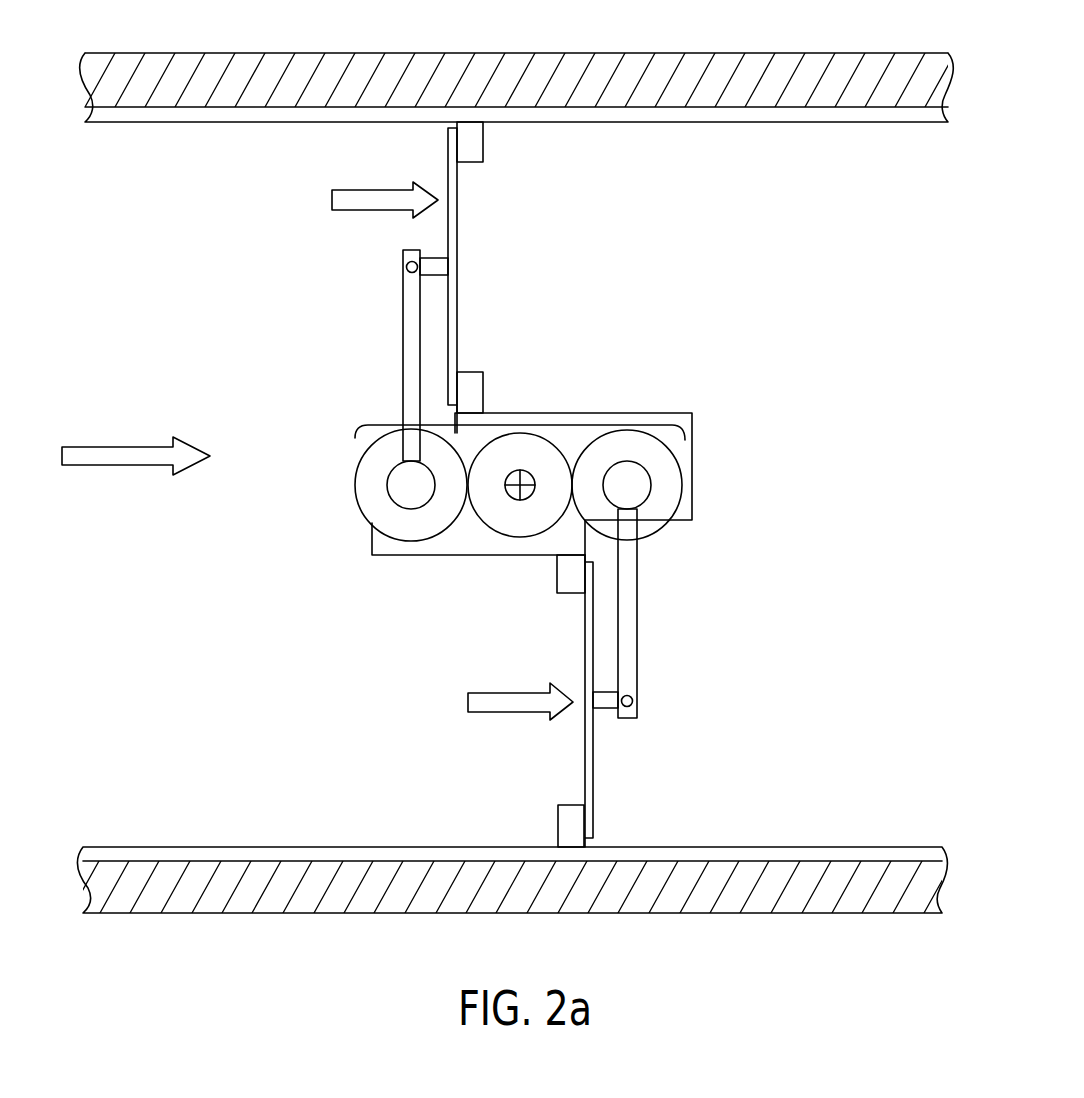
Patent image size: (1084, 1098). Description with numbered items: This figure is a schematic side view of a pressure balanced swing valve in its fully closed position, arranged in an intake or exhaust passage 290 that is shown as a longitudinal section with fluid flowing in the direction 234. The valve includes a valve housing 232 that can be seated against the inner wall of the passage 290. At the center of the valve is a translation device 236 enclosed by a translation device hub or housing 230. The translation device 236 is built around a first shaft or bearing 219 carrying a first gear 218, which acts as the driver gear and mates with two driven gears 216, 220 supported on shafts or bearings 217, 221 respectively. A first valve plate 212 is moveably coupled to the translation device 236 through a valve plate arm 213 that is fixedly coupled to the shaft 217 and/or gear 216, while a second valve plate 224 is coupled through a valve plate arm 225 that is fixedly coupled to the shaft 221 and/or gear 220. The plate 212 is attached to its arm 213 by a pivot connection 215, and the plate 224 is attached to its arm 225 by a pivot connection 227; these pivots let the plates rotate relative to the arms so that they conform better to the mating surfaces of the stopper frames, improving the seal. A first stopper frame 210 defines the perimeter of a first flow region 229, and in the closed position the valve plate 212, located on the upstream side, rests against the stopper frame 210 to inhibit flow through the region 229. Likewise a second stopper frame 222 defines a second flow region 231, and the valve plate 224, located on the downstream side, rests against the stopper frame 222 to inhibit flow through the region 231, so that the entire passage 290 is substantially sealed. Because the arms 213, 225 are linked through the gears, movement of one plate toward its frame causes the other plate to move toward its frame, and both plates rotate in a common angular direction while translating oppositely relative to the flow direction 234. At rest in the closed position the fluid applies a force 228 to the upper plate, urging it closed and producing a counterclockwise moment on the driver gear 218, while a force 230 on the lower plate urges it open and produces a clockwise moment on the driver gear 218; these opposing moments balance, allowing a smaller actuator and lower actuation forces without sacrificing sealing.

The first stopper frame 210 is at (470, 140).
The first valve plate 212 is at (455, 268).
The valve plate arm 213 is at (412, 364).
The pivot connection 215 is at (406, 263).
The gear 216 is at (412, 525).
The shaft or bearing 217 is at (395, 487).
The first gear 218 is at (520, 527).
The first shaft or bearing 219 is at (517, 493).
The gear 220 is at (650, 445).
The shaft or bearing 221 is at (640, 486).
The second stopper frame 222 is at (570, 590).
The second valve plate 224 is at (583, 760).
The valve plate arm 225 is at (627, 610).
The pivot connection 227 is at (636, 701).
The force 228 is at (348, 200).
The first flow region 229 is at (640, 208).
The translation device hub or housing 230 is at (695, 507).
The second flow region 231 is at (397, 743).
The valve housing 232 is at (820, 116).
The direction of fluid flow 234 is at (125, 460).
The translation device 236 is at (521, 413).
The intake or exhaust passage 290 is at (625, 65).